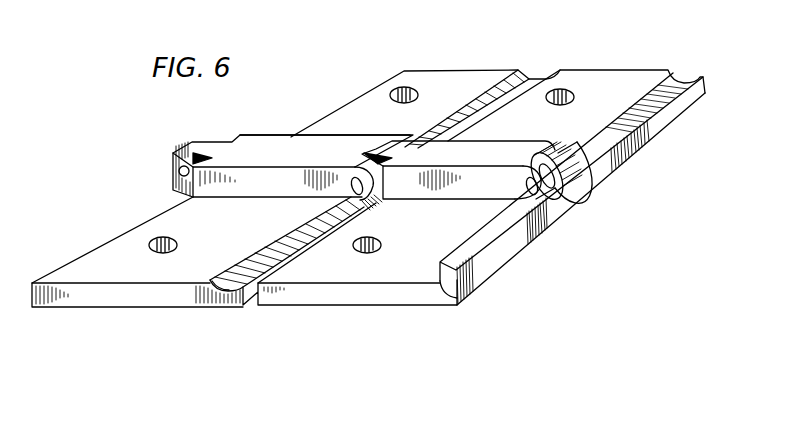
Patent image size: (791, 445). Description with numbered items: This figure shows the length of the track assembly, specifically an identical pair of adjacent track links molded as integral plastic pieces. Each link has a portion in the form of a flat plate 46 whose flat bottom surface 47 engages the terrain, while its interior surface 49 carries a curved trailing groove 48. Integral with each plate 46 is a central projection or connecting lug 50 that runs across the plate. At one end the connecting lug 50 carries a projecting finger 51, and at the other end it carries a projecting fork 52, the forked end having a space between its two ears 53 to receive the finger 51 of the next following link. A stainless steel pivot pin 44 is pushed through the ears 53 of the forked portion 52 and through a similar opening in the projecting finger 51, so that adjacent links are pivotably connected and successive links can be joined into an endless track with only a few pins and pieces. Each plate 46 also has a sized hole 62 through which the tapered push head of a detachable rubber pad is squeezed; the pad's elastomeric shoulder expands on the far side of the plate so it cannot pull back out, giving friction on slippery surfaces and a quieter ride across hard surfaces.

The flat plate 46 is at (409, 66).
The flat bottom surface 47 is at (346, 312).
The curved trailing groove 48 is at (233, 282).
The interior surface 49 is at (421, 245).
The connecting lug 50 is at (497, 150).
The projecting finger 51 is at (392, 156).
The projecting fork 52 is at (570, 143).
The ears of the forked portion 53 is at (583, 170).
The pivot pin 44 is at (556, 189).
The hole 62 is at (566, 88).